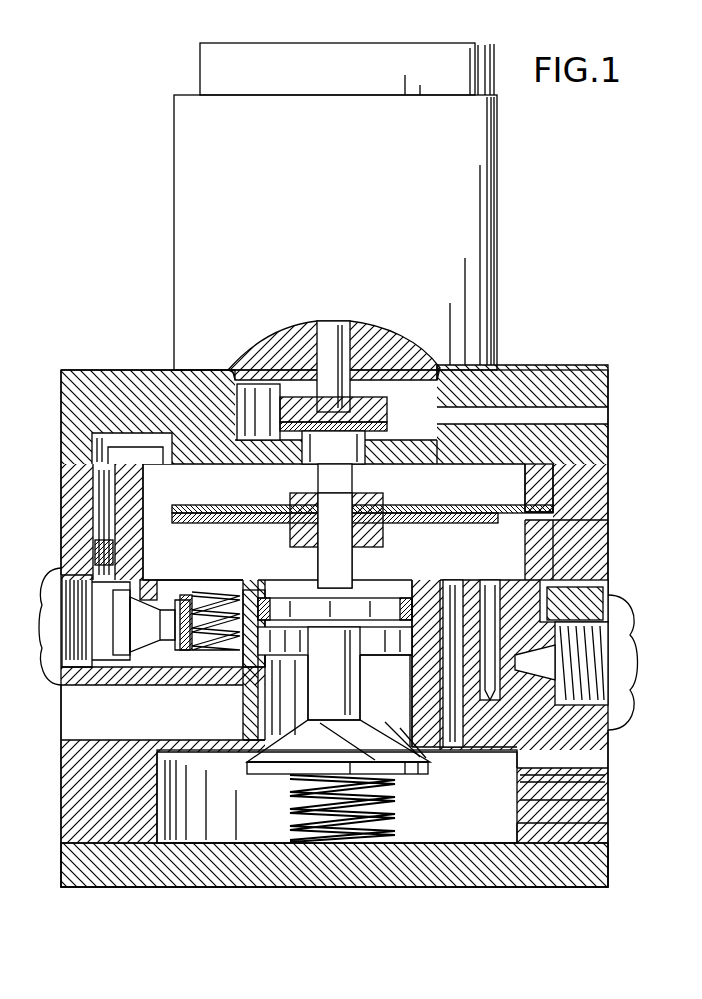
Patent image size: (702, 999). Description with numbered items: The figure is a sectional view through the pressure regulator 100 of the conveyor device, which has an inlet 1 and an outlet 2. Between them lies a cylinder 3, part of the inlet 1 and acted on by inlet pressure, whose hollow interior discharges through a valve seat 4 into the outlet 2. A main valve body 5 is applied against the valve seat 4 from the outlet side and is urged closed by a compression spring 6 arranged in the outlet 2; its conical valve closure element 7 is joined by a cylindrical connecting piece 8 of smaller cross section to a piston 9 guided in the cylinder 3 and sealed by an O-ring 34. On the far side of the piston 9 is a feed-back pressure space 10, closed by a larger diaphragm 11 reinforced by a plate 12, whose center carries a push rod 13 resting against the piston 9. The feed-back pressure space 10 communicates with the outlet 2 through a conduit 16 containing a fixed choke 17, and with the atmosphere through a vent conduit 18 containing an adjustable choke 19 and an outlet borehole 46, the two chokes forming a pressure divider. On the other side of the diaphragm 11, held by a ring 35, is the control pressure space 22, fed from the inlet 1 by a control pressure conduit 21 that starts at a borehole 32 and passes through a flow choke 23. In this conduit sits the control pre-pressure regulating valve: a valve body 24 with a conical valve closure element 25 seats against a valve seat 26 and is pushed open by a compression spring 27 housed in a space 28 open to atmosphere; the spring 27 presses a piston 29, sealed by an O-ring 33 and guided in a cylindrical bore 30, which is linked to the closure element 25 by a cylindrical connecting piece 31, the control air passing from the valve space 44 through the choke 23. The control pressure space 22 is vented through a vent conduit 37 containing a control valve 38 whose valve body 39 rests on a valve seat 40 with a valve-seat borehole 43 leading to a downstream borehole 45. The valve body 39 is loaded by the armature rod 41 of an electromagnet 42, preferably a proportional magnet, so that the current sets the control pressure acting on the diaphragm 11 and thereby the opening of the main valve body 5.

The inlet 1 is at (226, 733).
The outlet 2 is at (470, 848).
The cylinder 3 is at (285, 763).
The valve seat 4 is at (285, 740).
The main valve body 5 is at (290, 785).
The compression spring 6 is at (393, 828).
The conical valve closure element 7 is at (340, 749).
The cylindrical connecting piece 8 is at (336, 666).
The piston 9 is at (330, 590).
The feed-back pressure space 10 is at (378, 612).
The diaphragm 11 is at (475, 508).
The plate 12 is at (435, 503).
The push rod 13 is at (352, 560).
The conduit 16 is at (472, 745).
The fixed choke 17 is at (455, 590).
The vent conduit 18 is at (592, 590).
The adjustable choke 19 is at (590, 705).
The control pressure conduit 21 is at (107, 437).
The control pressure space 22 is at (185, 478).
The flow choke 23 is at (98, 525).
The valve body 24 is at (160, 610).
The conical valve closure element 25 is at (118, 655).
The valve seat 26 is at (155, 525).
The compression spring 27 is at (195, 640).
The space 28 is at (245, 655).
The piston 29 is at (210, 528).
The cylindrical bore 30 is at (200, 513).
The cylindrical connecting piece 31 is at (170, 640).
The borehole 32 is at (158, 655).
The O-ring 33 is at (205, 590).
The O-ring 34 is at (272, 610).
The ring 35 is at (548, 465).
The vent conduit 37 is at (485, 405).
The control valve 38 is at (292, 355).
The valve body 39 is at (380, 360).
The valve seat 40 is at (380, 432).
The armature rod 41 is at (330, 330).
The electromagnet 42 is at (185, 208).
The valve-seat borehole 43 is at (255, 362).
The valve space 44 is at (75, 640).
The borehole 45 is at (587, 400).
The outlet borehole 46 is at (490, 580).
The pressure regulator 100 is at (512, 308).